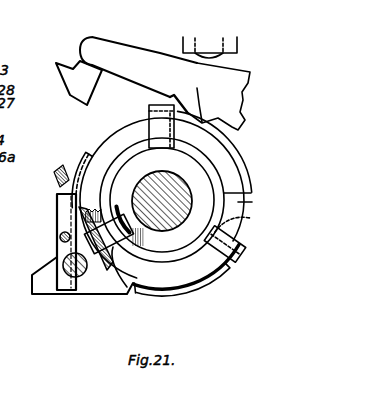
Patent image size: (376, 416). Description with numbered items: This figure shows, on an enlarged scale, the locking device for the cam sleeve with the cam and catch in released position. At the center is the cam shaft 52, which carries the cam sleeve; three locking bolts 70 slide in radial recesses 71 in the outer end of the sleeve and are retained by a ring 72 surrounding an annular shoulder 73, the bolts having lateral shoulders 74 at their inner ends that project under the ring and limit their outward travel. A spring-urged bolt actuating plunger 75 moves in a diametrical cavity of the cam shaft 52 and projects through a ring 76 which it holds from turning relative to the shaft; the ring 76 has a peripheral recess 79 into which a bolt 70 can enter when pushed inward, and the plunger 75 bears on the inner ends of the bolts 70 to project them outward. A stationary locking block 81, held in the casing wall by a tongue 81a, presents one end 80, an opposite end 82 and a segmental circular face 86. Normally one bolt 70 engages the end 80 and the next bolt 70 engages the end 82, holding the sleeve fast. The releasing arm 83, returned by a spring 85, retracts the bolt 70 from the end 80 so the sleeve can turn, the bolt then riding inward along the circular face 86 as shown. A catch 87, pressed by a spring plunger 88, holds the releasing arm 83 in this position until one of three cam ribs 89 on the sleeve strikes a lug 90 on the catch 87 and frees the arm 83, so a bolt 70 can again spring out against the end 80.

The cam shaft 52 is at (184, 178).
The locking bolts 70 is at (150, 107).
The radial recesses 71 is at (149, 133).
The ring 72 is at (254, 201).
The annular shoulder 73 is at (247, 191).
The lateral shoulders 74 is at (170, 149).
The bolt actuating plunger 75 is at (160, 232).
The ring 76 is at (134, 164).
The peripheral recess 79 is at (137, 243).
The end of locking block 80 is at (84, 153).
The locking block 81 is at (56, 219).
The tongue 81a is at (62, 250).
The opposite end of locking block 82 is at (138, 290).
The releasing arm 83 is at (79, 83).
The spring 85 is at (55, 178).
The segmental circular face 86 is at (133, 281).
The catch 87 is at (138, 74).
The spring plunger 88 is at (237, 54).
The cam ribs 89 is at (233, 120).
The lug 90 is at (192, 97).